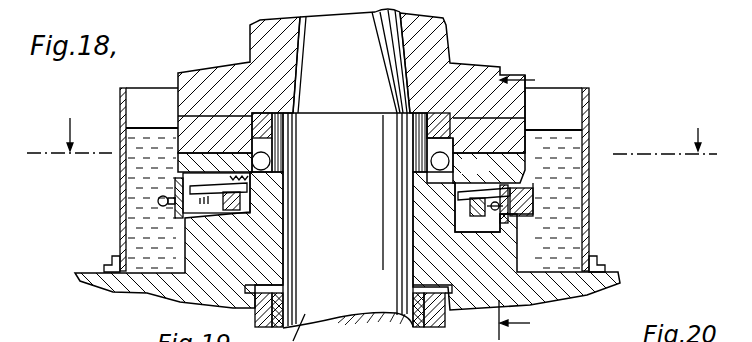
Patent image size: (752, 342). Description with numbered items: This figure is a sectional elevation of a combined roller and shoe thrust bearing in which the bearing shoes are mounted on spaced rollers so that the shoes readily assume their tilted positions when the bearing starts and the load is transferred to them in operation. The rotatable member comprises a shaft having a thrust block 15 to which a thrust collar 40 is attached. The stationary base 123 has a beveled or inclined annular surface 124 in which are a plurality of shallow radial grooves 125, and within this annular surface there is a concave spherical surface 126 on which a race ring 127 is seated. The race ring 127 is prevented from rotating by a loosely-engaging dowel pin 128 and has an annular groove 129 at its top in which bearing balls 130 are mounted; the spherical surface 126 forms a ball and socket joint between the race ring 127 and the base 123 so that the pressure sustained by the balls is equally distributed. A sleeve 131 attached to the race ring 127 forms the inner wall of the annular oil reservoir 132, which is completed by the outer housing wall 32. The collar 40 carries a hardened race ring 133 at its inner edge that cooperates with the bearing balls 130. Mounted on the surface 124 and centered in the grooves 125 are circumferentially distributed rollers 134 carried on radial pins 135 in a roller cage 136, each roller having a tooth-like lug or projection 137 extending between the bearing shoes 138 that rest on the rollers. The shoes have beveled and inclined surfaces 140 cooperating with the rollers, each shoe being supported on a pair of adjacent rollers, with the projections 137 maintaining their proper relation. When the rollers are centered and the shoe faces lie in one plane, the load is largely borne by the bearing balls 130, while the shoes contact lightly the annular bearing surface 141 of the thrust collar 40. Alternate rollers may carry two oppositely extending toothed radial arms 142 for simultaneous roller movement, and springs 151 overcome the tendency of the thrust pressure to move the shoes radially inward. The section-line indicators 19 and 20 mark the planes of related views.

The thrust block 15 is at (450, 66).
The section line 19 is at (372, 136).
The section line 20 is at (525, 202).
The outer housing wall 32 is at (586, 192).
The thrust collar 40 is at (527, 124).
The base 123 is at (527, 297).
The beveled or inclined annular surface 124 is at (210, 214).
The shallow radial grooves 125 is at (450, 212).
The concave spherical surface 126 is at (218, 305).
The race ring 127 is at (500, 200).
The dowel pin 128 is at (280, 228).
The annular groove 129 is at (465, 178).
The bearing balls 130 is at (427, 165).
The sleeve 131 is at (433, 128).
The annular oil reservoir 132 is at (560, 135).
The hardened race ring 133 is at (503, 81).
The rollers 134 is at (543, 172).
The radial pins 135 is at (440, 200).
The roller cage 136 is at (533, 220).
The lug or projection 137 is at (526, 153).
The bearing shoes 138 is at (527, 129).
The beveled and inclined surfaces 140 is at (489, 168).
The annular bearing surface 141 is at (545, 131).
The radial arms 142 is at (180, 212).
The springs 151 is at (280, 170).